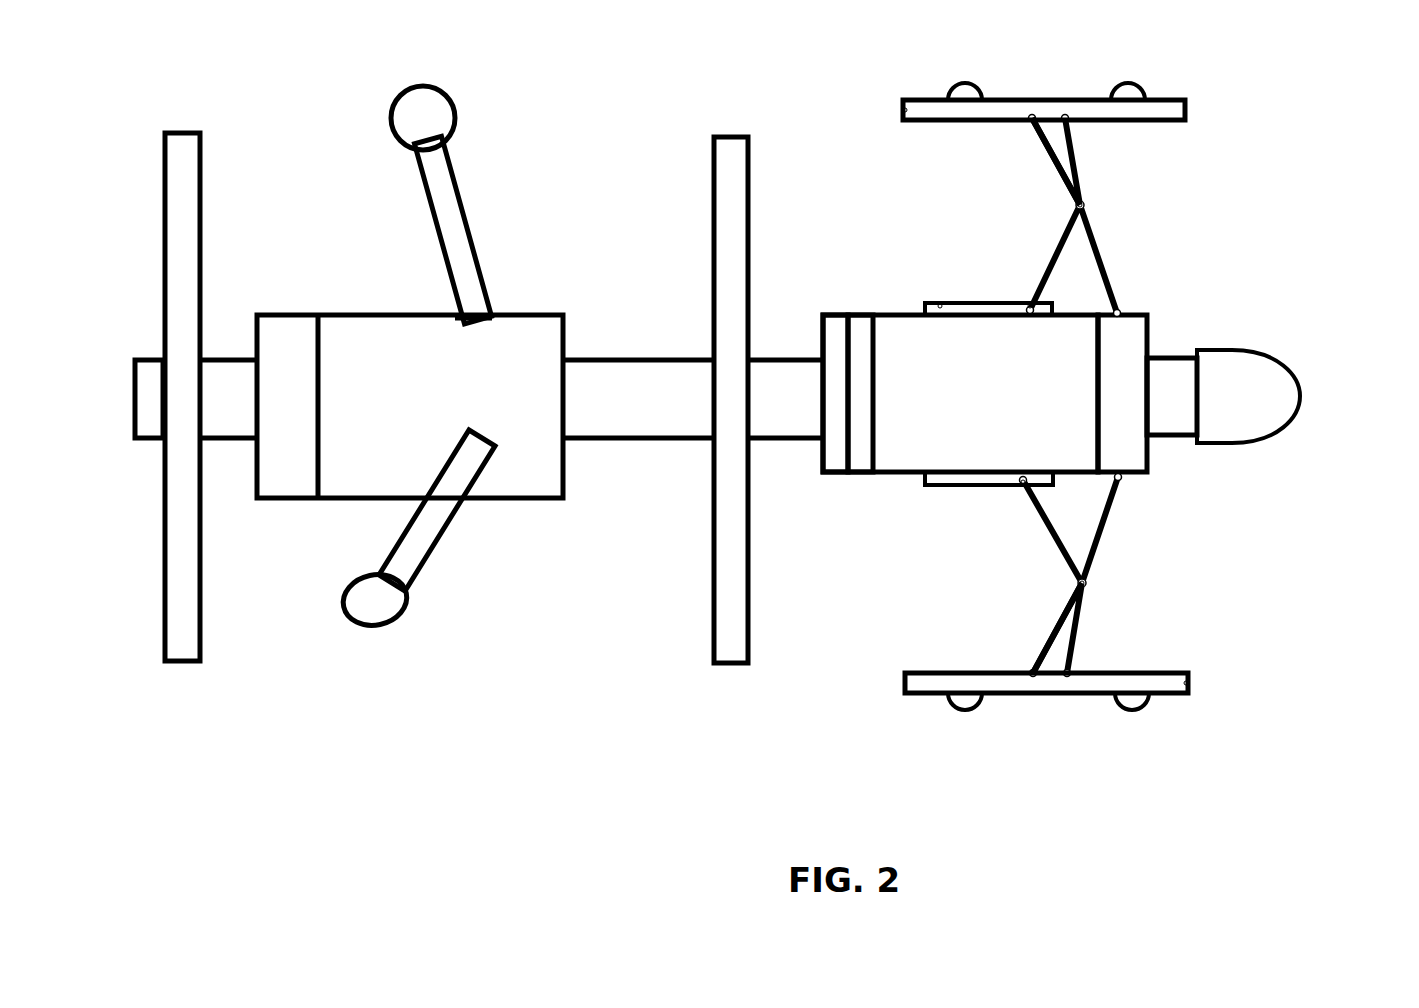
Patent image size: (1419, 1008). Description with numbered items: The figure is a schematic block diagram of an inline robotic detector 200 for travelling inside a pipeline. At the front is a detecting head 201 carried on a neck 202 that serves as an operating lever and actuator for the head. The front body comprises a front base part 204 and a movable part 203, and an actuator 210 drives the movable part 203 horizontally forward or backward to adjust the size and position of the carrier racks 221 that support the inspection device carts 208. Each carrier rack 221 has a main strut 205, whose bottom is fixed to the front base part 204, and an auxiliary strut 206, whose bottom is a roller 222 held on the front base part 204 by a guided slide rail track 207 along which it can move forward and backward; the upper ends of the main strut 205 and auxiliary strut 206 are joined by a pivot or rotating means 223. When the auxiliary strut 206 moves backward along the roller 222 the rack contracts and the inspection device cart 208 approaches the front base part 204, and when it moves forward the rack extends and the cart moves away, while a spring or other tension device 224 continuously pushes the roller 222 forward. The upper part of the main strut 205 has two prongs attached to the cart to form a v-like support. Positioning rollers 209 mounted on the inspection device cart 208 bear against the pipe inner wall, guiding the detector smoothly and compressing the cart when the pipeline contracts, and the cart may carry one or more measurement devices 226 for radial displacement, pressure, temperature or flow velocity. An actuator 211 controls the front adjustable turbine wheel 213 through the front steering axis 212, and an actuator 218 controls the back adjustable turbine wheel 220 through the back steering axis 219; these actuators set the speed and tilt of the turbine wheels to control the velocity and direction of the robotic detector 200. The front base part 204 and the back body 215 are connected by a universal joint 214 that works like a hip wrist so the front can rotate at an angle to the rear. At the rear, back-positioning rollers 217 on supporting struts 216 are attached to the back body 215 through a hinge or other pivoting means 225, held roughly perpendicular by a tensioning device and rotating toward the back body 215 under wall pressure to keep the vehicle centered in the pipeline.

The robotic detector 200 is at (721, 755).
The detecting head 201 is at (1285, 407).
The neck 202 is at (1180, 437).
The movable part 203 is at (1127, 330).
The front base part 204 is at (1072, 330).
The main strut 205 is at (1083, 200).
The auxiliary strut 206 is at (1057, 232).
The guided slide rail track 207 is at (955, 302).
The inspection device cart 208 is at (1183, 122).
The positioning roller 209 is at (958, 78).
The actuator 210 is at (870, 313).
The actuator 211 is at (838, 455).
The front steering axis 212 is at (763, 353).
The front adjustable turbine wheel 213 is at (752, 650).
The universal joint 214 is at (603, 358).
The back body 215 is at (540, 470).
The supporting strut 216 is at (463, 192).
The back-positioning roller 217 is at (450, 84).
The actuator 218 is at (273, 475).
The back steering axis 219 is at (215, 355).
The back adjustable turbine wheel 220 is at (180, 133).
The carrier rack 221 is at (1022, 148).
The roller 222 is at (1028, 299).
The pivot or rotating means 223 is at (1090, 211).
The spring or tension device 224 is at (938, 299).
The hinge or pivoting means 225 is at (459, 315).
The measurement device 226 is at (897, 98).